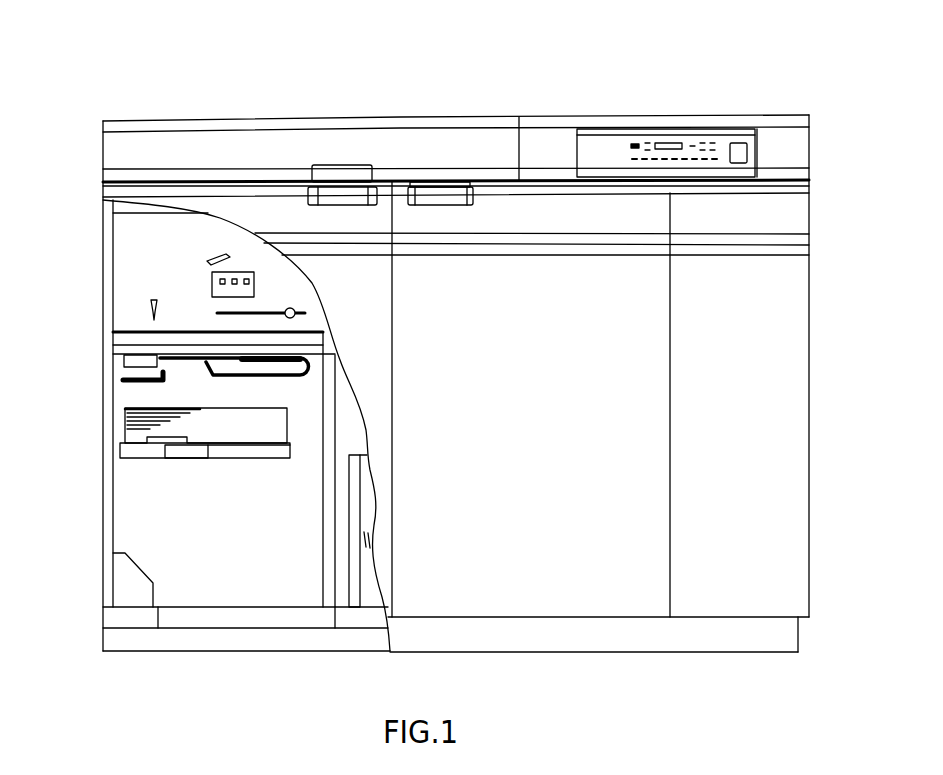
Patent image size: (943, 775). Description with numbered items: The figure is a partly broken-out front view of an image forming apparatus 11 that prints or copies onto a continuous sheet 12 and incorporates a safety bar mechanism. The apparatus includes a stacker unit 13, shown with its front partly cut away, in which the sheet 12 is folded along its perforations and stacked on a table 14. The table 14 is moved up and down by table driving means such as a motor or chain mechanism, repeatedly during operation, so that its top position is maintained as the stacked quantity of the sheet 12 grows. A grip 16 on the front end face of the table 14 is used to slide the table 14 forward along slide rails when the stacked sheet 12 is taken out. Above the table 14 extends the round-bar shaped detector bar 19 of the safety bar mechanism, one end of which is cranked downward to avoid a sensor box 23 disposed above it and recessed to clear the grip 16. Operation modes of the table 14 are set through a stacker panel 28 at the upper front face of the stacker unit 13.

The image forming apparatus 11 is at (725, 96).
The stacker unit 13 is at (100, 233).
The stacker panel 28 is at (210, 286).
The sensor box 23 is at (124, 362).
The detector bar 19 is at (143, 381).
The sheet 12 is at (125, 415).
The table 14 is at (120, 452).
The grip 16 is at (175, 452).